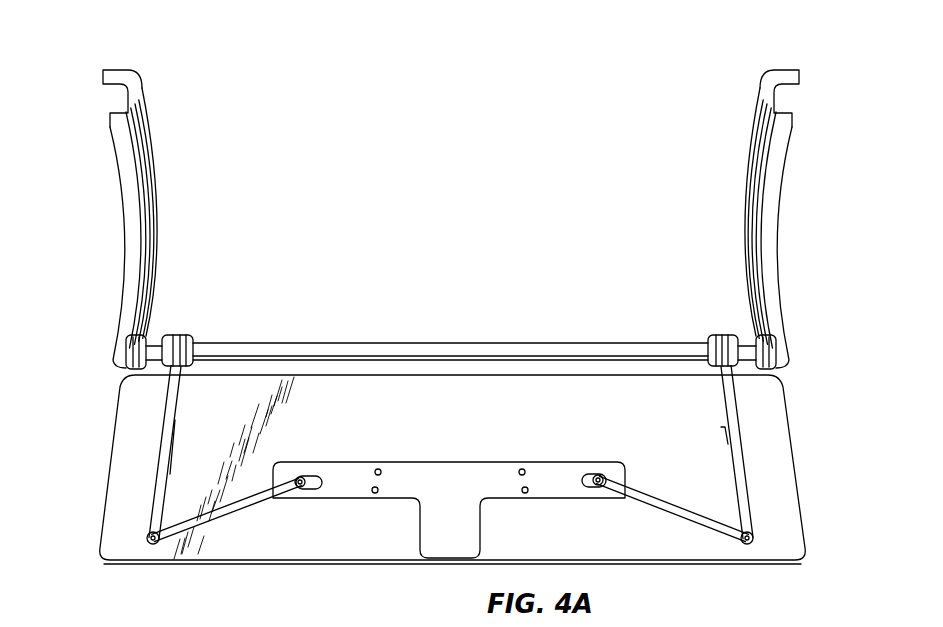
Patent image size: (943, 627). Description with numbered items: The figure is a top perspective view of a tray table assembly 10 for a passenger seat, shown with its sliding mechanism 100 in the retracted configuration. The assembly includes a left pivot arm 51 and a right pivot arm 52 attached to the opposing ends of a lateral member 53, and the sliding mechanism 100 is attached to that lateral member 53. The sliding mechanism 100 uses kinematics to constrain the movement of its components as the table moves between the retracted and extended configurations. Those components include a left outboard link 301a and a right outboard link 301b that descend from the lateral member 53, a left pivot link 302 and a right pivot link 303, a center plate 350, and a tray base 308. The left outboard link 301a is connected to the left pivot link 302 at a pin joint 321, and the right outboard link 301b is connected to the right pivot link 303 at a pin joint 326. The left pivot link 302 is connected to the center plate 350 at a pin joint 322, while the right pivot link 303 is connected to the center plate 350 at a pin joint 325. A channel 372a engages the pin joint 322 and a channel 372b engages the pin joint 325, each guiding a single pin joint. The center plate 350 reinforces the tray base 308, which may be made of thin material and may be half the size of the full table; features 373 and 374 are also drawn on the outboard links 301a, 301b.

The tray table assembly 10 is at (630, 98).
The left pivot arm 51 is at (132, 277).
The right pivot arm 52 is at (770, 278).
The lateral member 53 is at (497, 350).
The sliding mechanism 100 is at (451, 324).
The left outboard link 301a is at (132, 451).
The right outboard link 301b is at (746, 451).
The left pivot link 302 is at (215, 522).
The right pivot link 303 is at (665, 503).
The tray base 308 is at (466, 410).
The pin joint 321 is at (147, 538).
The pin joint 322 is at (300, 488).
The pin joint 325 is at (598, 486).
The pin joint 326 is at (754, 536).
The center plate 350 is at (430, 480).
The channel 372a is at (301, 478).
The channel 372b is at (597, 478).
The first rail 373 is at (172, 467).
The second rail 374 is at (723, 440).